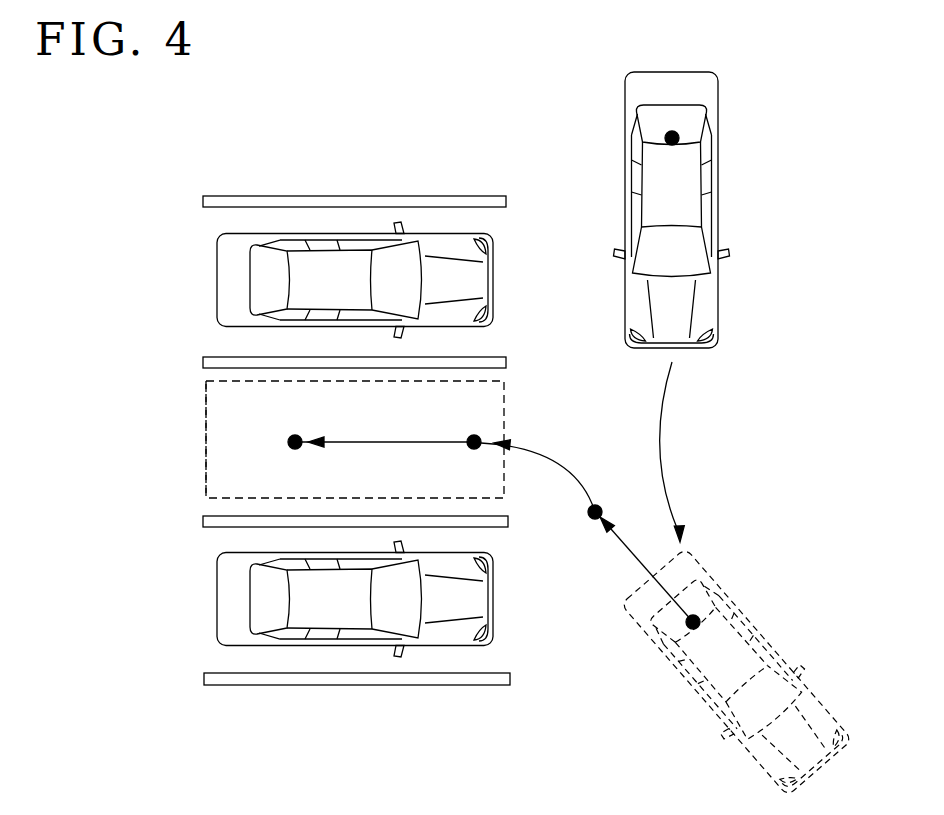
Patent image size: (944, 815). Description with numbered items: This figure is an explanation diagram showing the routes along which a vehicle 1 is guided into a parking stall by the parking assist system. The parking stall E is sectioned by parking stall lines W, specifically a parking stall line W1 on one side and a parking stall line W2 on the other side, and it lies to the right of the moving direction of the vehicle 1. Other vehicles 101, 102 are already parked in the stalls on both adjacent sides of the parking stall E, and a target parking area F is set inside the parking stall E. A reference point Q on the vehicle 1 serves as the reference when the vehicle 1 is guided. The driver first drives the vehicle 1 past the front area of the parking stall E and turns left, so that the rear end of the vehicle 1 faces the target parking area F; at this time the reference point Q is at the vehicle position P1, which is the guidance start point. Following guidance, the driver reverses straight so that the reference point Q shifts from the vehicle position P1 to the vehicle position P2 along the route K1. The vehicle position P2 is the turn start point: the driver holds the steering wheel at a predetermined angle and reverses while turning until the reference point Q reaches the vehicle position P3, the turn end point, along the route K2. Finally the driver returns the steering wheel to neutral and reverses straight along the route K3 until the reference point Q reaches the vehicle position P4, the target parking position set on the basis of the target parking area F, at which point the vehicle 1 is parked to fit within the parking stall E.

The vehicle 1 is at (731, 126).
The other vehicle 101 is at (213, 268).
The other vehicle 102 is at (215, 602).
The parking stall line W is at (243, 195).
The parking stall line W1 is at (217, 356).
The parking stall line W2 is at (285, 522).
The parking stall E is at (197, 422).
The target parking area F is at (205, 468).
The route K1 is at (637, 588).
The route K2 is at (547, 457).
The route K3 is at (352, 440).
The reference point Q is at (675, 145).
The vehicle position P1 is at (695, 616).
The vehicle position P2 is at (589, 519).
The vehicle position P3 is at (478, 436).
The vehicle position P4 is at (288, 442).